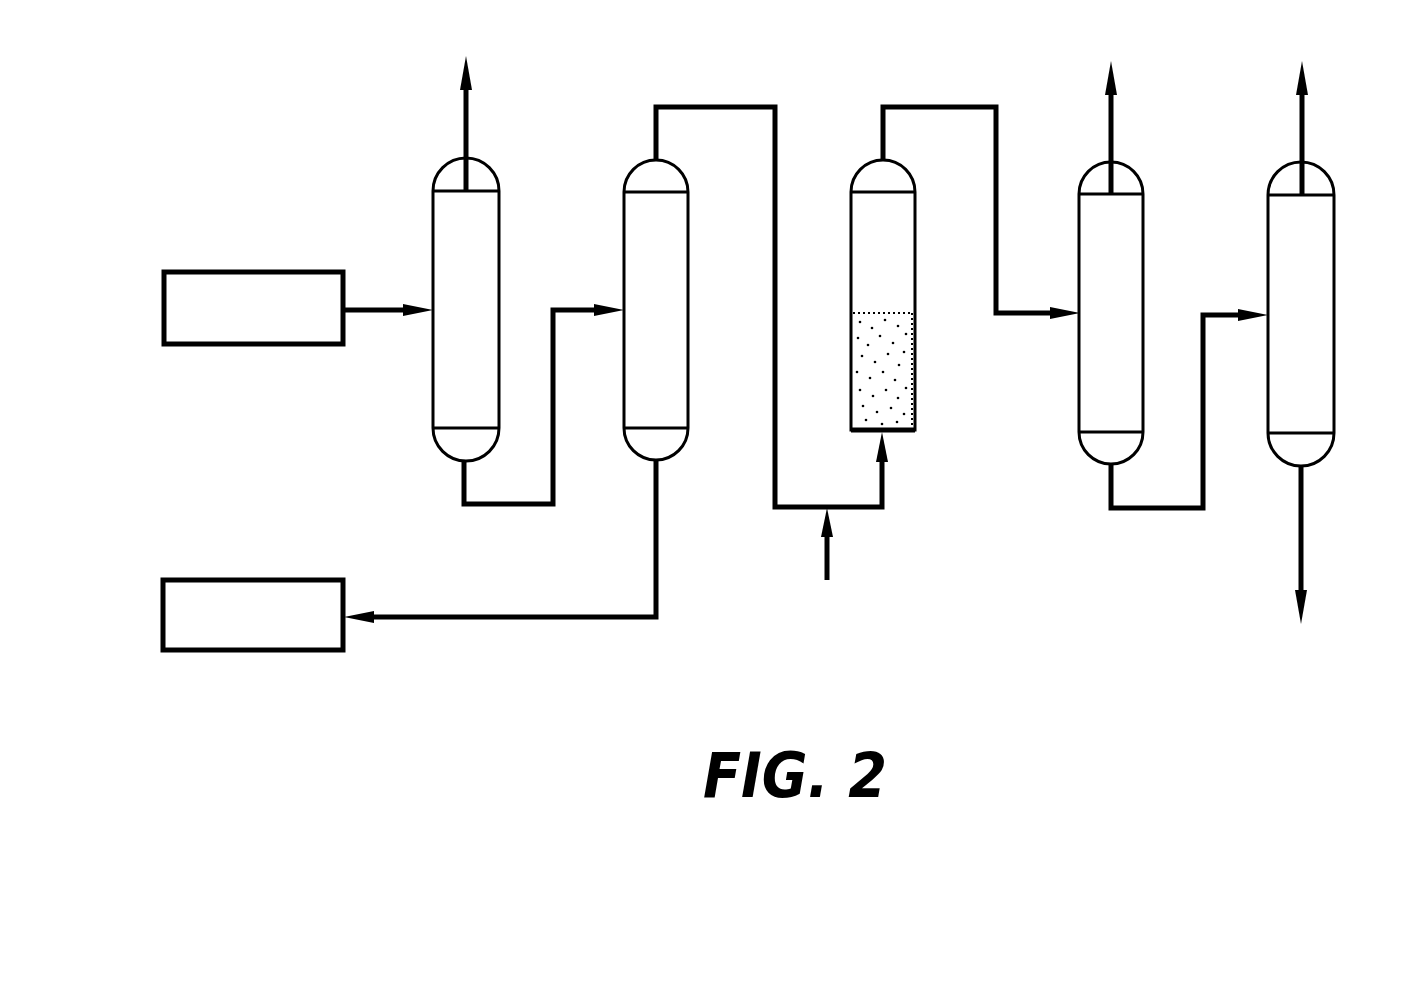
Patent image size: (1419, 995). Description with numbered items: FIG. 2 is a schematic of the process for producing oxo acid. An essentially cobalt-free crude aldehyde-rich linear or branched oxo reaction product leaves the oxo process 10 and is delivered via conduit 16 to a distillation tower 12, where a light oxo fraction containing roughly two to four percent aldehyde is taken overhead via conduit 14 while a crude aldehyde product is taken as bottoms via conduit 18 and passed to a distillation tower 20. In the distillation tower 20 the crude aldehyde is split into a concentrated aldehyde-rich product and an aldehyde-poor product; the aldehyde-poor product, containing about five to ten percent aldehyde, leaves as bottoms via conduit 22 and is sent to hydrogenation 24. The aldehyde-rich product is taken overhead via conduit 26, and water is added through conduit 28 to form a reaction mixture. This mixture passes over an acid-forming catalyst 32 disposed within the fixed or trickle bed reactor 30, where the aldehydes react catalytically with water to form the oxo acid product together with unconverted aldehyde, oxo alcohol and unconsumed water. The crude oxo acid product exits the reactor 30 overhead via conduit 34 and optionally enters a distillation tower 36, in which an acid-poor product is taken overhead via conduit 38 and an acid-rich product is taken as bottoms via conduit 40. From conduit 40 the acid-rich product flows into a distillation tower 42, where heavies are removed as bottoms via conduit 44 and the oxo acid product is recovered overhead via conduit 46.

The oxo process 10 is at (267, 272).
The distillation tower 12 is at (497, 221).
The conduit 14 is at (467, 121).
The conduit 16 is at (384, 305).
The conduit 18 is at (500, 504).
The distillation tower 20 is at (625, 266).
The conduit 22 is at (525, 617).
The hydrogenation 24 is at (272, 580).
The conduit 26 is at (733, 103).
The conduit 28 is at (832, 549).
The fixed or trickle bed reactor 30 is at (915, 348).
The acid-forming catalyst 32 is at (880, 403).
The conduit 34 is at (957, 103).
The distillation tower 36 is at (1146, 221).
The conduit 38 is at (1115, 132).
The conduit 40 is at (1178, 510).
The distillation tower 42 is at (1337, 238).
The conduit 44 is at (1302, 540).
The conduit 46 is at (1305, 130).